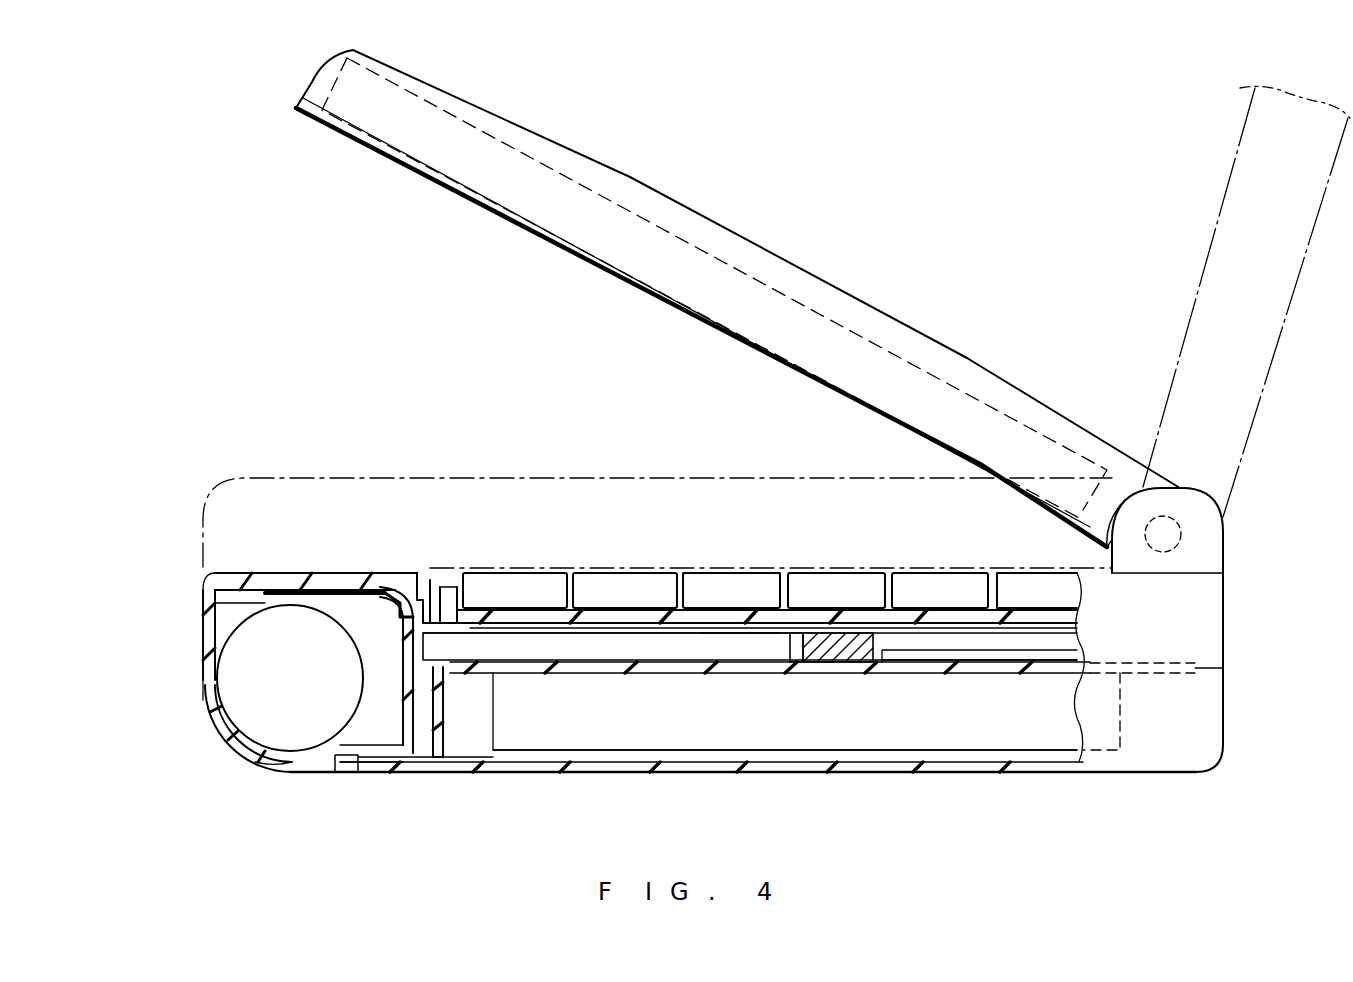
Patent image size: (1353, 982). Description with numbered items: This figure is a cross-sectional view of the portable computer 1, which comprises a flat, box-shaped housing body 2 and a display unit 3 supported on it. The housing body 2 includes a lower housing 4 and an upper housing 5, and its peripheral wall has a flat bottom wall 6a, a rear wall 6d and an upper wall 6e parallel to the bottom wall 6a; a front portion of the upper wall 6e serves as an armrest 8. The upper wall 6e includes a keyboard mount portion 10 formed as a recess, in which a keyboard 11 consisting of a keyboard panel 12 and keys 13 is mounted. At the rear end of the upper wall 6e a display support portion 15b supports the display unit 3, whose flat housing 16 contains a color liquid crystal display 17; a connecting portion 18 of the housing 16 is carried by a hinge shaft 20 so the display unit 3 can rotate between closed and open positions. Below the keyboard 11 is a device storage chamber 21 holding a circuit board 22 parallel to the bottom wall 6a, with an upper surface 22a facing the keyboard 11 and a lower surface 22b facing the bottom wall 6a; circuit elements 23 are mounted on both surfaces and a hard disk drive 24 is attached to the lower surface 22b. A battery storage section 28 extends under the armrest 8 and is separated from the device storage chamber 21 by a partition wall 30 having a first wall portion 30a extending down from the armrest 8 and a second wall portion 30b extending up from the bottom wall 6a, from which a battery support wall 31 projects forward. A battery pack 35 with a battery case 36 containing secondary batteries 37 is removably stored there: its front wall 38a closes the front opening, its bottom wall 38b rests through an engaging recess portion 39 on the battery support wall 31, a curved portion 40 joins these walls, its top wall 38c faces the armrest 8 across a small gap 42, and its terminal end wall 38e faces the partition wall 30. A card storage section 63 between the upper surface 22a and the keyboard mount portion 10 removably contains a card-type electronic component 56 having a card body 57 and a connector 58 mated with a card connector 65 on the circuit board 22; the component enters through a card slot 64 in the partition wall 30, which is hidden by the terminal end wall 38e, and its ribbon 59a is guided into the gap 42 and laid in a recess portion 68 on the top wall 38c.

The portable computer 1 is at (872, 290).
The housing body 2 is at (1276, 648).
The display unit 3 is at (706, 216).
The lower housing 4 is at (1216, 720).
The upper housing 5 is at (1212, 648).
The bottom wall 6a is at (728, 775).
The rear wall 6d is at (1226, 616).
The upper wall 6e is at (216, 576).
The armrest 8 is at (329, 582).
The keyboard mount portion 10 is at (462, 590).
The keyboard 11 is at (850, 597).
The keyboard panel 12 is at (696, 630).
The keys 13 is at (690, 578).
The display support portion 15b is at (1226, 553).
The housing 16 is at (486, 180).
The color liquid crystal display 17 is at (581, 236).
The connecting portion 18 is at (1124, 492).
The hinge shaft 20 is at (1163, 553).
The device storage chamber 21 is at (497, 724).
The circuit board 22 is at (561, 668).
The upper surface 22a is at (531, 665).
The lower surface 22b is at (977, 688).
The circuit elements 23 is at (990, 656).
The hard disk drive 24 is at (936, 742).
The battery storage section 28 is at (410, 770).
The partition wall 30 is at (442, 670).
The first wall portion 30a is at (436, 586).
The second wall portion 30b is at (445, 760).
The battery support wall 31 is at (358, 776).
The battery pack 35 is at (200, 690).
The battery case 36 is at (256, 766).
The secondary batteries 37 is at (219, 708).
The front wall 38a is at (202, 688).
The bottom wall 38b is at (292, 774).
The top wall 38c is at (247, 603).
The terminal end wall 38e is at (398, 660).
The engaging recess portion 39 is at (346, 776).
The curved portion 40 is at (226, 746).
The gap 42 is at (250, 582).
The card-type electronic component 56 is at (756, 645).
The card body 57 is at (633, 674).
The connector 58 is at (797, 658).
The ribbon 59a is at (381, 596).
The card storage section 63 is at (742, 624).
The card slot 64 is at (416, 648).
The card connector 65 is at (858, 658).
The recess portion 68 is at (288, 592).